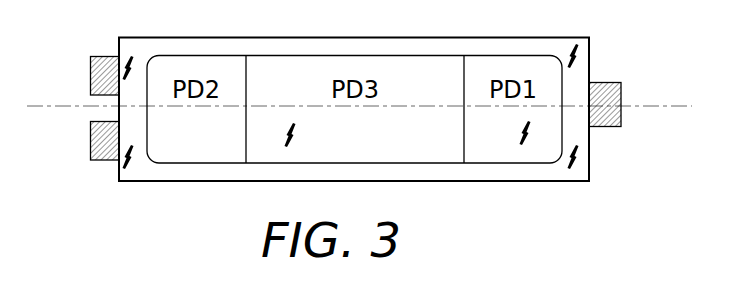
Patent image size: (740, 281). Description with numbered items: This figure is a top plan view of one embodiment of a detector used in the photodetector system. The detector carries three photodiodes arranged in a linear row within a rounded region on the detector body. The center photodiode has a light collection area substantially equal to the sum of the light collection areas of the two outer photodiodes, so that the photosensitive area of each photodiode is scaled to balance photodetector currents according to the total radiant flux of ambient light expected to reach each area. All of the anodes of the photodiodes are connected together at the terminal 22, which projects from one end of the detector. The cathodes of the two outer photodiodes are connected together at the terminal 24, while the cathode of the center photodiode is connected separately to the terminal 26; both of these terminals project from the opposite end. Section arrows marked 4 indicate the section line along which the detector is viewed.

The section line 4- 4 is at (47, 96).
The terminal 22 is at (608, 97).
The terminal 24 is at (106, 145).
The terminal 26 is at (106, 70).